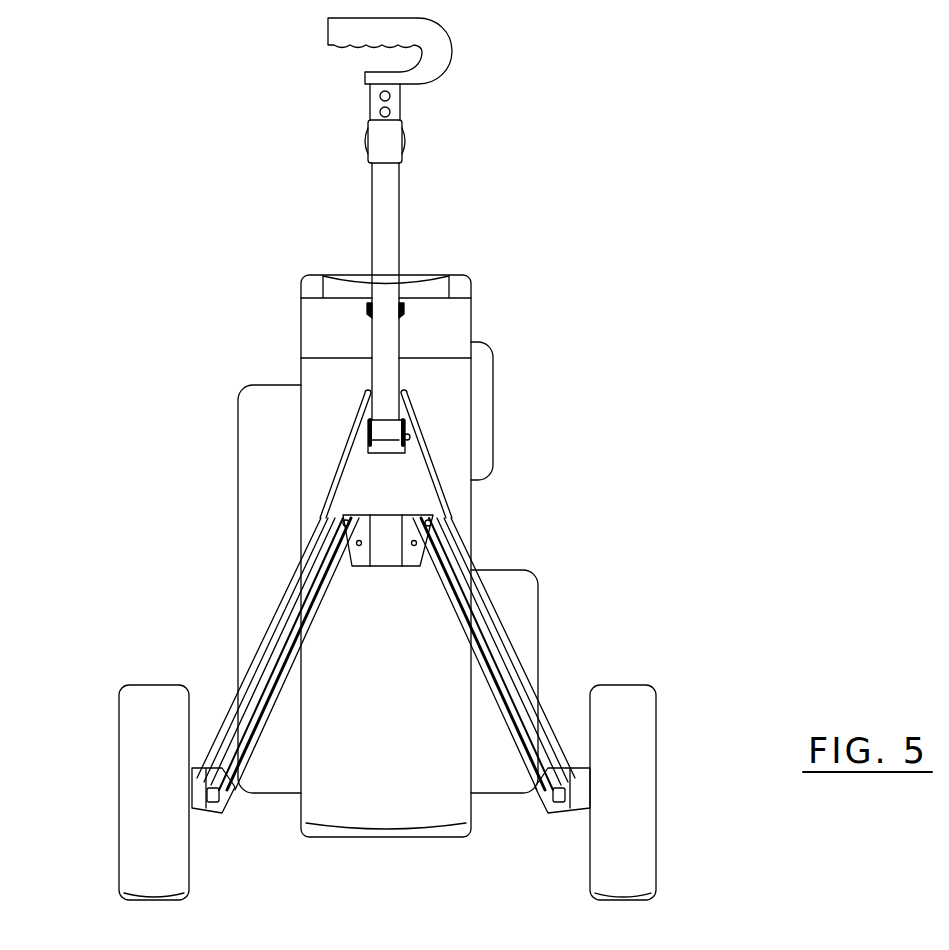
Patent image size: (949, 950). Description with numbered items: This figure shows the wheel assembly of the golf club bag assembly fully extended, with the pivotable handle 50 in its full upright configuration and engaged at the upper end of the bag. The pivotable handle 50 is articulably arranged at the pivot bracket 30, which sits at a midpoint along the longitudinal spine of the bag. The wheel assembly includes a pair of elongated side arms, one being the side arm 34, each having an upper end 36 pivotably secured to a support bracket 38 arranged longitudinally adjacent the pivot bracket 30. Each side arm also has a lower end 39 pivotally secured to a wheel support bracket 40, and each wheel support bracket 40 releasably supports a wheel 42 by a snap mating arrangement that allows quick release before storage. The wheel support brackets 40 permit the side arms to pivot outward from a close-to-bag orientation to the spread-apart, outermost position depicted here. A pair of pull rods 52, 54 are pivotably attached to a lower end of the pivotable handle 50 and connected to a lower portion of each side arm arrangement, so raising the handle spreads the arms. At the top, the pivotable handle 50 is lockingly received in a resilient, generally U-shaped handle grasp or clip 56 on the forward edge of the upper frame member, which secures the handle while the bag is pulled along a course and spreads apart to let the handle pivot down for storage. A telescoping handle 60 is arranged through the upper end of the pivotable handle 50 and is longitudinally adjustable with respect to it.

The pivot bracket 30 is at (407, 427).
The side arm 34 is at (483, 600).
The upper end 36 is at (330, 547).
The support bracket 38 is at (387, 527).
The lower end 39 is at (237, 777).
The wheel support bracket 40 is at (227, 800).
The wheel 42 is at (135, 841).
The pivotable handle 50 is at (378, 205).
The pull rod 52 is at (357, 418).
The pull rod 54 is at (436, 467).
The handle grasp or clip 56 is at (399, 308).
The telescoping handle 60 is at (370, 97).